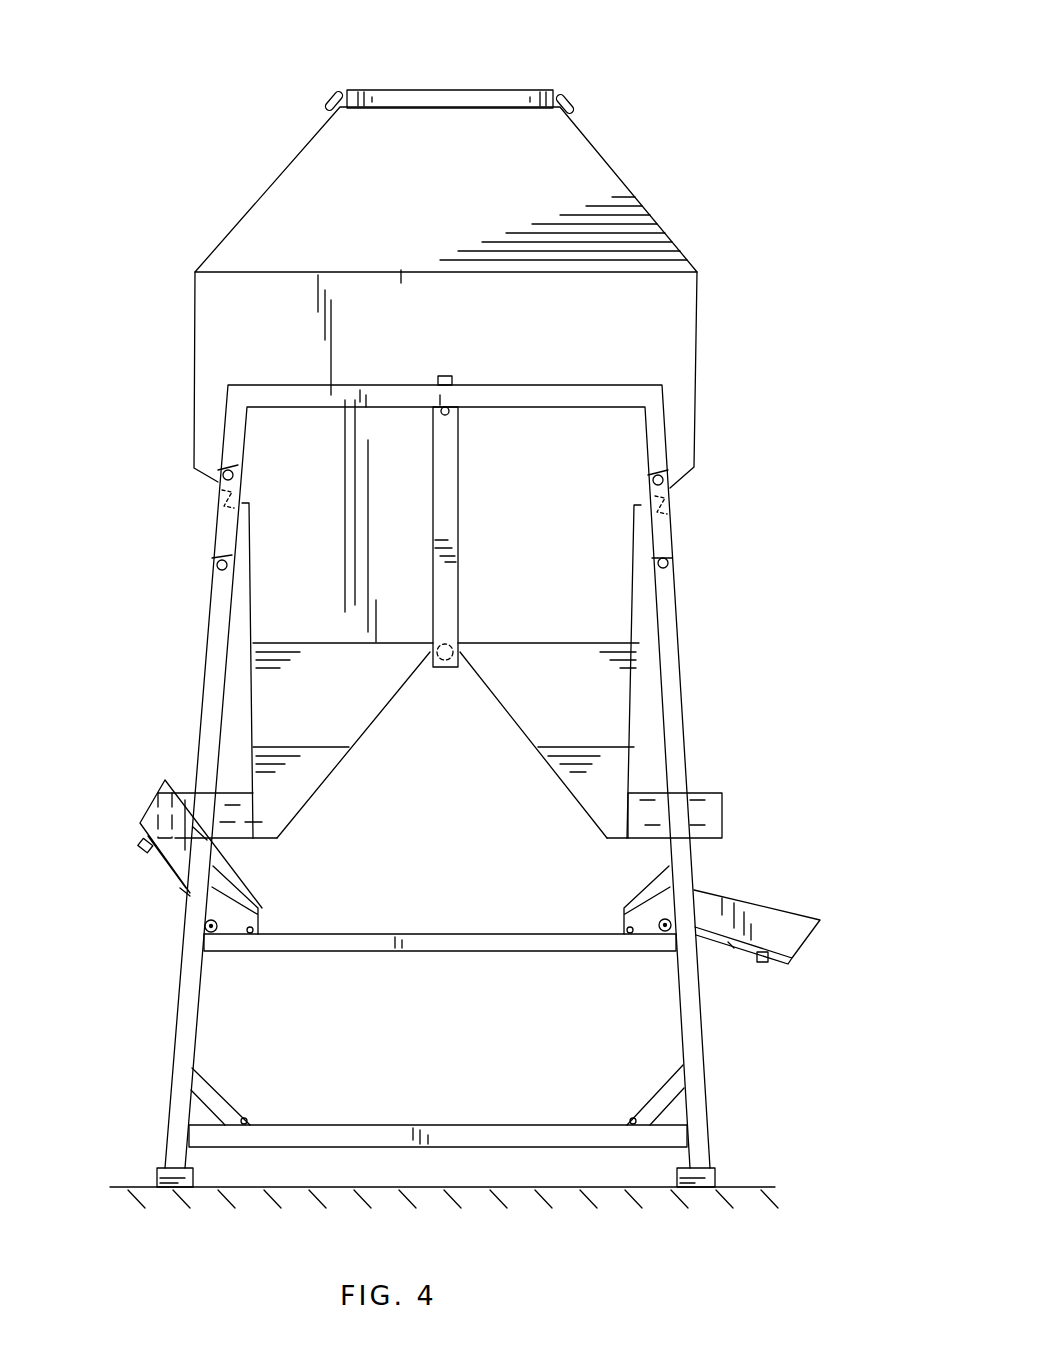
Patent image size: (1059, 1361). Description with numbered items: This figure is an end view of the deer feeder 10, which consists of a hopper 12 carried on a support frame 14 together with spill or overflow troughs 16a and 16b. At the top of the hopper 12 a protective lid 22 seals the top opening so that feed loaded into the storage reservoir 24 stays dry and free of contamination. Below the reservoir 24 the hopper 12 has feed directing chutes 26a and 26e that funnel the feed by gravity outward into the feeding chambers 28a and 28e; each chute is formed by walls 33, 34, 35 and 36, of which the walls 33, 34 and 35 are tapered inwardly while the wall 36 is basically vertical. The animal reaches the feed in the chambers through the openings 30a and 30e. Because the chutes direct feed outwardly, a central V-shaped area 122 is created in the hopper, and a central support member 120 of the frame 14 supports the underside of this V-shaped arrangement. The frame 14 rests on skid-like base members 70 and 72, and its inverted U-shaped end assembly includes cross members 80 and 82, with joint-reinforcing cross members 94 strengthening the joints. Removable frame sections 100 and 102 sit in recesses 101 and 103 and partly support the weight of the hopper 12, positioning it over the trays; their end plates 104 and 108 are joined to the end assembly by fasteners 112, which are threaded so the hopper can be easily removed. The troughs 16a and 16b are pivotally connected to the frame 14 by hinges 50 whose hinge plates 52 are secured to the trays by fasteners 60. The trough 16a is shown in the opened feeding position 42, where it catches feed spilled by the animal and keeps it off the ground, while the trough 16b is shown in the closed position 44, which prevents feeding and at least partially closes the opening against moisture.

The deer feeder 10 is at (722, 63).
The hopper 12 is at (620, 170).
The support frame 14 is at (680, 598).
The spill trough 16a is at (822, 928).
The spill trough 16b is at (172, 866).
The protective lid 22 is at (487, 100).
The storage reservoir 24 is at (690, 335).
The feed directing chute 26a is at (640, 660).
The feed directing chute 26e is at (253, 695).
The feeding chamber 28a is at (700, 793).
The feeding chamber 28e is at (200, 793).
The opening 30a is at (724, 812).
The opening 30e is at (140, 825).
The wall 33 is at (620, 715).
The wall 34 is at (283, 690).
The wall 35 is at (356, 742).
The wall 36 is at (255, 718).
The opened feeding position 42 is at (810, 905).
The closed position 44 is at (135, 844).
The hinge 50 is at (214, 936).
The hinge plate 52 is at (183, 893).
The fastener 60 is at (766, 963).
The base member 70 is at (715, 1178).
The base member 72 is at (157, 1177).
The cross member 80 is at (436, 951).
The cross member 82 is at (447, 1137).
The joint-reinforcing cross member 94 is at (250, 922).
The removable frame section 100 is at (668, 503).
The recess 101 is at (678, 487).
The removable frame section 102 is at (220, 508).
The recess 103 is at (205, 480).
The end plate 104 is at (665, 537).
The end plate 108 is at (222, 548).
The fastener 112 is at (228, 470).
The central support member 120 is at (462, 537).
The central V-shaped area 122 is at (418, 680).